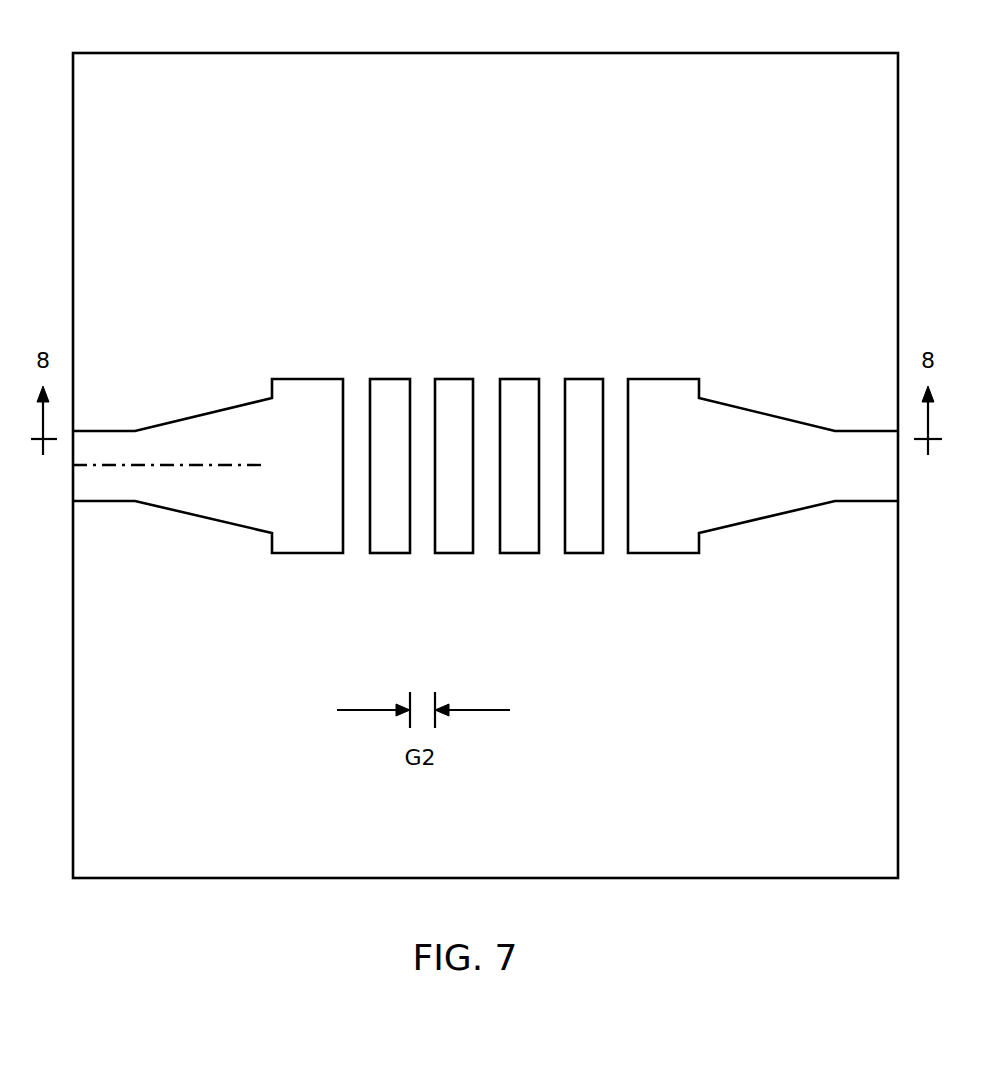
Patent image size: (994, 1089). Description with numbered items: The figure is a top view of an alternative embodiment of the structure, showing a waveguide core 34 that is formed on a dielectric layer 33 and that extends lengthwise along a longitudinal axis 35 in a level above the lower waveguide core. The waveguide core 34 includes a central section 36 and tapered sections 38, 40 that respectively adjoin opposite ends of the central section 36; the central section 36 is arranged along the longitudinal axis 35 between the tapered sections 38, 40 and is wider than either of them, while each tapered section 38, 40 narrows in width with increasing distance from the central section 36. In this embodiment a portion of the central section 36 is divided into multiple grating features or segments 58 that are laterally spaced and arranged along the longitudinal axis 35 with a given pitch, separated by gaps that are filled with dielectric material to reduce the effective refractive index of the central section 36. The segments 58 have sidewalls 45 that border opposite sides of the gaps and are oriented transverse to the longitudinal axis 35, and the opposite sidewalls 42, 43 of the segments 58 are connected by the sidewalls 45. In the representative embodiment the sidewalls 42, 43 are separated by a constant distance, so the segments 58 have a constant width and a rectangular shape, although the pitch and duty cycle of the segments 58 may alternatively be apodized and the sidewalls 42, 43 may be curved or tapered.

The dielectric layer 33 is at (134, 840).
The waveguide core 34 is at (208, 378).
The longitudinal axis 35 is at (157, 466).
The central section 36 is at (485, 373).
The tapered section 38 is at (197, 442).
The tapered section 40 is at (739, 433).
The sidewall 42 is at (610, 411).
The sidewall 43 is at (385, 553).
The sidewalls 45 is at (516, 412).
The segments 58 is at (386, 412).